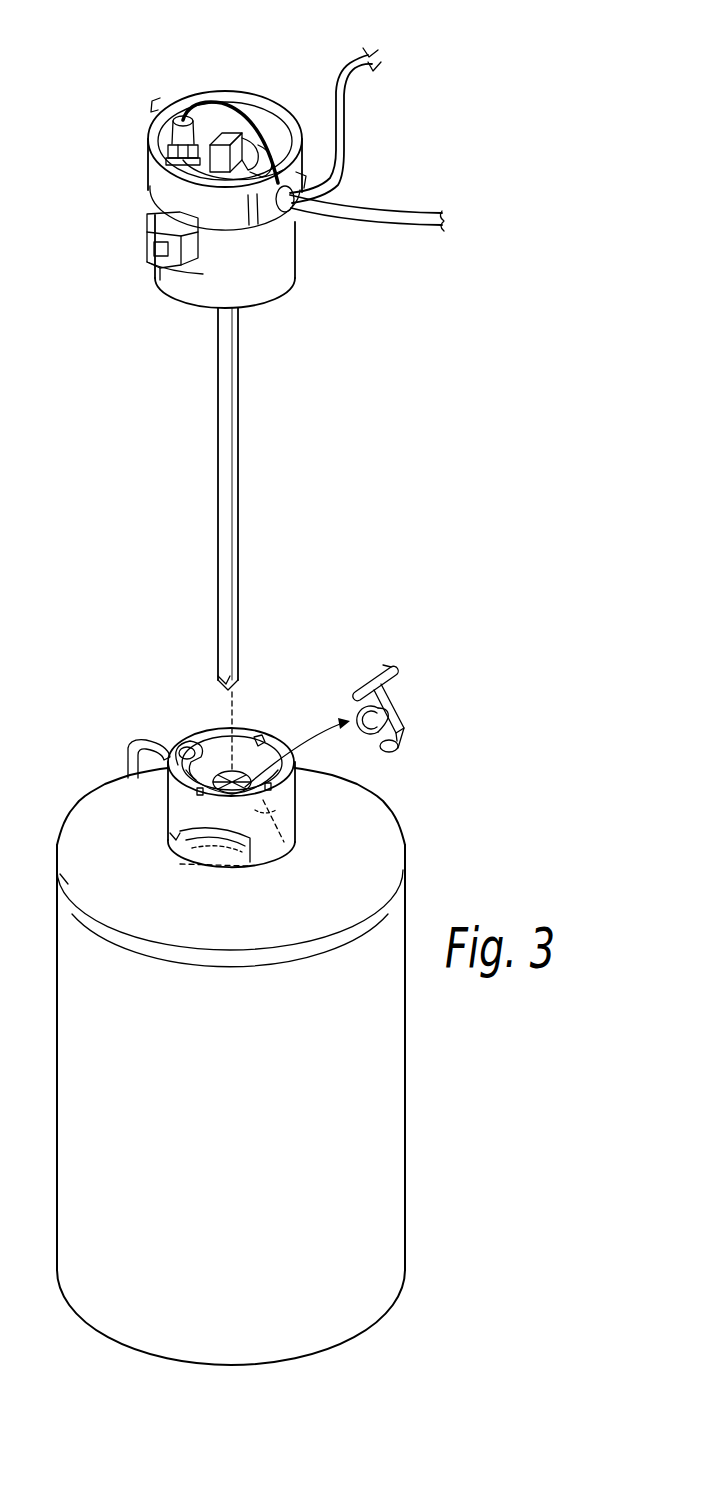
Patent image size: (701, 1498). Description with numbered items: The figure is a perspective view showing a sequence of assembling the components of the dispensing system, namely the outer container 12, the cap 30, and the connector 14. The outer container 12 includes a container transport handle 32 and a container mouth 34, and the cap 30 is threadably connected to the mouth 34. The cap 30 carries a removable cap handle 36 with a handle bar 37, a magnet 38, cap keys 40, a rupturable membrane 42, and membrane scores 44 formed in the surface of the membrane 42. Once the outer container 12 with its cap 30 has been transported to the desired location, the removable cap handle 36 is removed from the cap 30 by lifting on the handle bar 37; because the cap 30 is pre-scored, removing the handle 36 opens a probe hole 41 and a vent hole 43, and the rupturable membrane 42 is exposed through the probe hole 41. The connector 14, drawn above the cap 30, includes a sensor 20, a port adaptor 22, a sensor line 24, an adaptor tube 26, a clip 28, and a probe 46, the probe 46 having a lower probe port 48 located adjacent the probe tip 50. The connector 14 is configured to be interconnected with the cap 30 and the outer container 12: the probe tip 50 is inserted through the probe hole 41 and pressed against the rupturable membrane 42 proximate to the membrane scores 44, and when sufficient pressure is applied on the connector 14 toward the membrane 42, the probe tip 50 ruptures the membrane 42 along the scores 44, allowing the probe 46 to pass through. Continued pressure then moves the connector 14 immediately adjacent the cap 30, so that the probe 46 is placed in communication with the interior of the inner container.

The outer container 12 is at (413, 1090).
The connector 14 is at (158, 93).
The sensor 20 is at (174, 118).
The port adaptor 22 is at (230, 140).
The sensor line 24 is at (335, 110).
The adaptor tube 26 is at (395, 216).
The clip 28 is at (140, 239).
The cap 30 is at (306, 779).
The container transport handle 32 is at (125, 748).
The container mouth 34 is at (205, 840).
The removable cap handle 36 is at (398, 714).
The handle bar 37 is at (400, 644).
The magnet 38 is at (181, 748).
The cap keys 40 is at (270, 789).
The probe hole 41 is at (237, 766).
The rupturable membrane 42 is at (247, 784).
The vent hole 43 is at (285, 840).
The membrane scores 44 is at (189, 748).
The probe 46 is at (222, 408).
The lower probe port 48 is at (240, 686).
The probe tip 50 is at (228, 688).